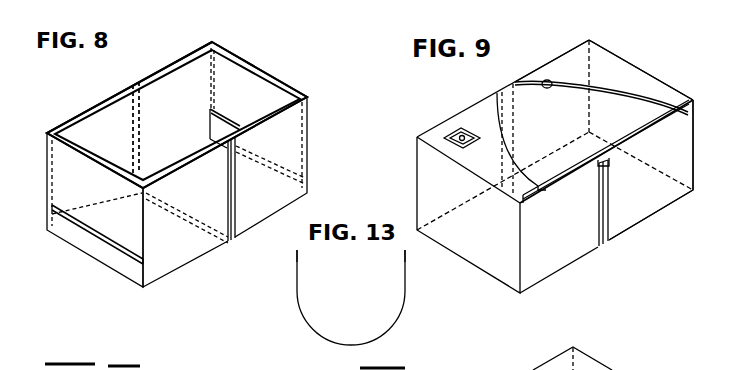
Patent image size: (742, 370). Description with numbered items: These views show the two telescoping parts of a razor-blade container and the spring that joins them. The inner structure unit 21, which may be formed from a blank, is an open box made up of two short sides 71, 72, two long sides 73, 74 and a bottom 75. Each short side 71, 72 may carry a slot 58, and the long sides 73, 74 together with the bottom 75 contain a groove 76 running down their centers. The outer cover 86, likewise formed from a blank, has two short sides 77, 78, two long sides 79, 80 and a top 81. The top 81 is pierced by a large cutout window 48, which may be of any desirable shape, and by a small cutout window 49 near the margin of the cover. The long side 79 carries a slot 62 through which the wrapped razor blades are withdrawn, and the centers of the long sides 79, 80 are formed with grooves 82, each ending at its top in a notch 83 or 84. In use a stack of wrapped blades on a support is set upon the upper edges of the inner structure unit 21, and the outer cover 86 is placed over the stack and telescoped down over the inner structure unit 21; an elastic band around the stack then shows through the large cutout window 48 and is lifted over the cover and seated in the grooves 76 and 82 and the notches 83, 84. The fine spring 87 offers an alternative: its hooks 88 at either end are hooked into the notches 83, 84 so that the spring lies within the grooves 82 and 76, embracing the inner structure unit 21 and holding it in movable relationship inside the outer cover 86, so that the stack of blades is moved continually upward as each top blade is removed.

In FIG. 8, the inner structure unit 21 is at (255, 44).
In FIG. 8, the short side 72 is at (258, 84).
In FIG. 8, the long side 73 is at (118, 125).
In FIG. 8, the short side 71 is at (68, 170).
In FIG. 8, the slot 58 is at (228, 118).
In FIG. 8, the long side 74 is at (182, 222).
In FIG. 8, the bottom 75 is at (173, 167).
In FIG. 8, the groove 76 is at (231, 210).
In FIG. 9, the short side 77 is at (489, 247).
In FIG. 9, the long side 79 is at (574, 236).
In FIG. 9, the outer cover 86 is at (610, 43).
In FIG. 9, the top 81 is at (617, 73).
In FIG. 9, the large cutout window 48 is at (549, 80).
In FIG. 9, the long side 80 is at (537, 117).
In FIG. 9, the notch 84 is at (511, 84).
In FIG. 9, the slot 62 is at (690, 110).
In FIG. 9, the short side 78 is at (668, 152).
In FIG. 9, the small cutout window 49 is at (449, 135).
In FIG. 9, the groove 82 is at (602, 215).
In FIG. 9, the notch 83 is at (607, 167).
In FIG. 13, the fine spring 87 is at (296, 292).
In FIG. 13, the hook 88 is at (298, 251).